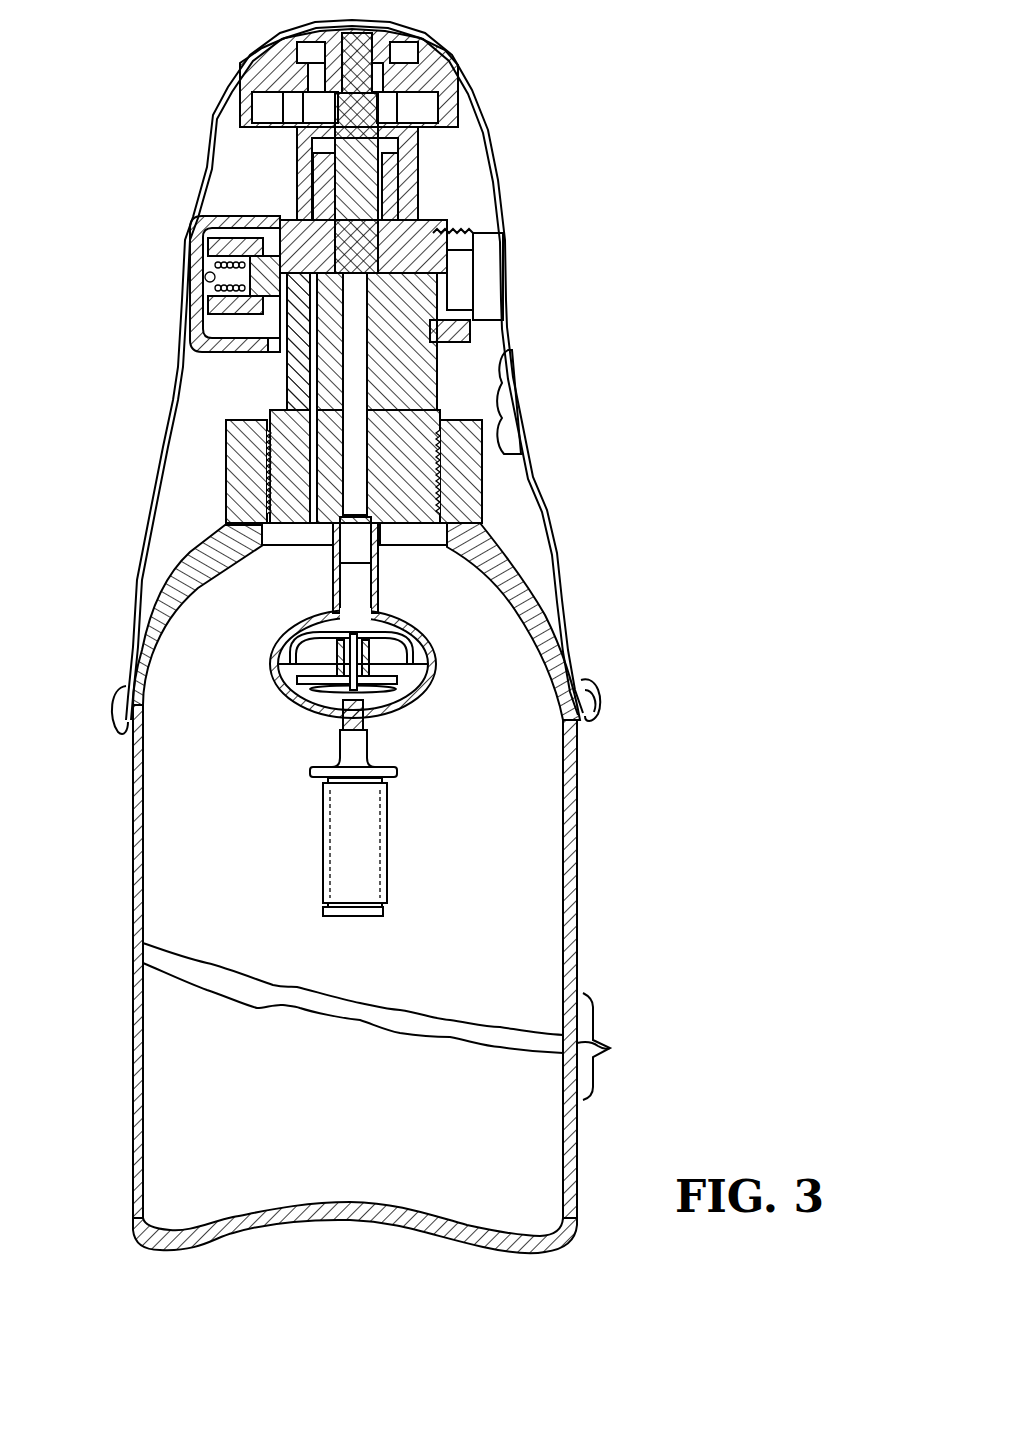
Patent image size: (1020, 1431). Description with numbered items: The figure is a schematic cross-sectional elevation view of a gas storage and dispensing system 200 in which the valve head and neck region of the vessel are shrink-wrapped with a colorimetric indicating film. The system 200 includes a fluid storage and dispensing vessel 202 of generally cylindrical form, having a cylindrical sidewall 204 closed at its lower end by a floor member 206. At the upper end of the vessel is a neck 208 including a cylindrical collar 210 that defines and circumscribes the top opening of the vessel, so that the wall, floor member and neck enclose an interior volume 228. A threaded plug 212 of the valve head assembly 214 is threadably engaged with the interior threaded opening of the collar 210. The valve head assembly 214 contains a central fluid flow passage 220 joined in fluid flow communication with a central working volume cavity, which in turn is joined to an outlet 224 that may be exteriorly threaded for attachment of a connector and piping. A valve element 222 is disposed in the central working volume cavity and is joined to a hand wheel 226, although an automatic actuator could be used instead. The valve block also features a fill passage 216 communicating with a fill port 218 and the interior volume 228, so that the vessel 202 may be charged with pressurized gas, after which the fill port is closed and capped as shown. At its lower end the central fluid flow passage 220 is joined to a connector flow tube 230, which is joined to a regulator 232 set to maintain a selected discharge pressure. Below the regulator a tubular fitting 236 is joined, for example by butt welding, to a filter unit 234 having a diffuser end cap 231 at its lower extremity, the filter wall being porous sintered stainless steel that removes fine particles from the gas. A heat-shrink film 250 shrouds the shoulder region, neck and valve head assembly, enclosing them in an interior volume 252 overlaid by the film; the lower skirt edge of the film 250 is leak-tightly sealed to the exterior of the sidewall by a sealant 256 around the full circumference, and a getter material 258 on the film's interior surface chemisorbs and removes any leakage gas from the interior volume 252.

The gas storage and dispensing system 200 is at (335, 377).
The fluid storage and dispensing vessel 202 is at (578, 790).
The cylindrical sidewall 204 is at (132, 750).
The floor member 206 is at (278, 1230).
The neck 208 is at (510, 570).
The cylindrical collar 210 is at (465, 487).
The threaded plug 212 is at (402, 396).
The valve head assembly 214 is at (290, 362).
The fill passage 216 is at (315, 383).
The fill port 218 is at (190, 247).
The central fluid flow passage 220 is at (357, 366).
The valve element 222 is at (428, 242).
The outlet 224 is at (487, 273).
The hand wheel 226 is at (452, 93).
The interior volume 228 is at (398, 1169).
The connector flow tube 230 is at (333, 572).
The diffuser end cap 231 is at (365, 915).
The regulator 232 is at (418, 700).
The filter unit 234 is at (378, 850).
The tubular fitting 236 is at (366, 754).
The heat-shrink film 250 is at (507, 195).
The interior volume 252 is at (468, 163).
The sealant 256 is at (598, 712).
The getter material 258 is at (503, 437).